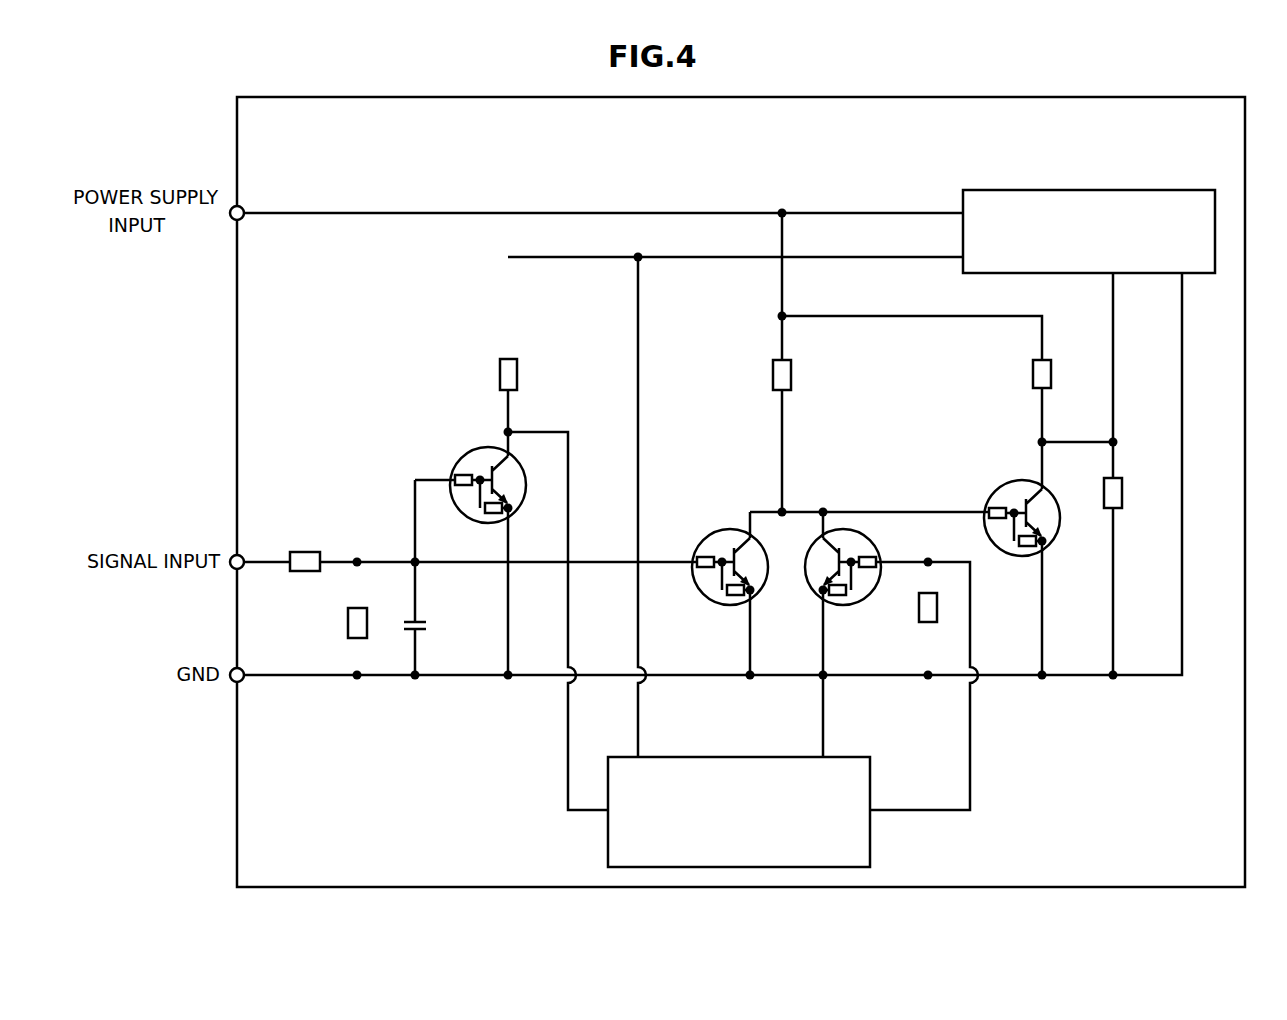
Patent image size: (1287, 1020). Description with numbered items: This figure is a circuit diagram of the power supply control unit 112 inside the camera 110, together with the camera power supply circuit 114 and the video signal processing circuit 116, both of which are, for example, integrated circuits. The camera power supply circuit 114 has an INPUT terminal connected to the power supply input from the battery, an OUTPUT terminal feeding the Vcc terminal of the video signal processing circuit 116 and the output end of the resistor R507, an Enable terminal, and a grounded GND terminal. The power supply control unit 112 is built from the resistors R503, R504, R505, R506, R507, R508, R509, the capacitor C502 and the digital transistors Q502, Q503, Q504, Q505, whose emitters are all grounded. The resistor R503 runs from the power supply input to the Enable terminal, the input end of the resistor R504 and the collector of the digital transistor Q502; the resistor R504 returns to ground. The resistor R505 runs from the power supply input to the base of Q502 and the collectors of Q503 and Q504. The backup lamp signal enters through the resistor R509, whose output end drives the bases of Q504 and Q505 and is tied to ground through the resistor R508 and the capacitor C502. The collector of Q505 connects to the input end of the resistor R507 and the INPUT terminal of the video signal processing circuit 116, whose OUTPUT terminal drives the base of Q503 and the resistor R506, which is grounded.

The camera 110 is at (380, 97).
The power supply control unit 112 is at (322, 366).
The camera power supply circuit 114 is at (978, 190).
The video signal processing circuit 116 is at (872, 832).
The resistor R503 is at (1032, 376).
The resistor R504 is at (1122, 494).
The resistor R505 is at (792, 373).
The resistor R506 is at (918, 620).
The resistor R507 is at (518, 373).
The resistor R508 is at (347, 625).
The resistor R509 is at (300, 552).
The capacitor C502 is at (427, 625).
The digital transistor Q502 is at (1000, 480).
The digital transistor Q503 is at (880, 546).
The digital transistor Q504 is at (706, 528).
The digital transistor Q505 is at (472, 448).